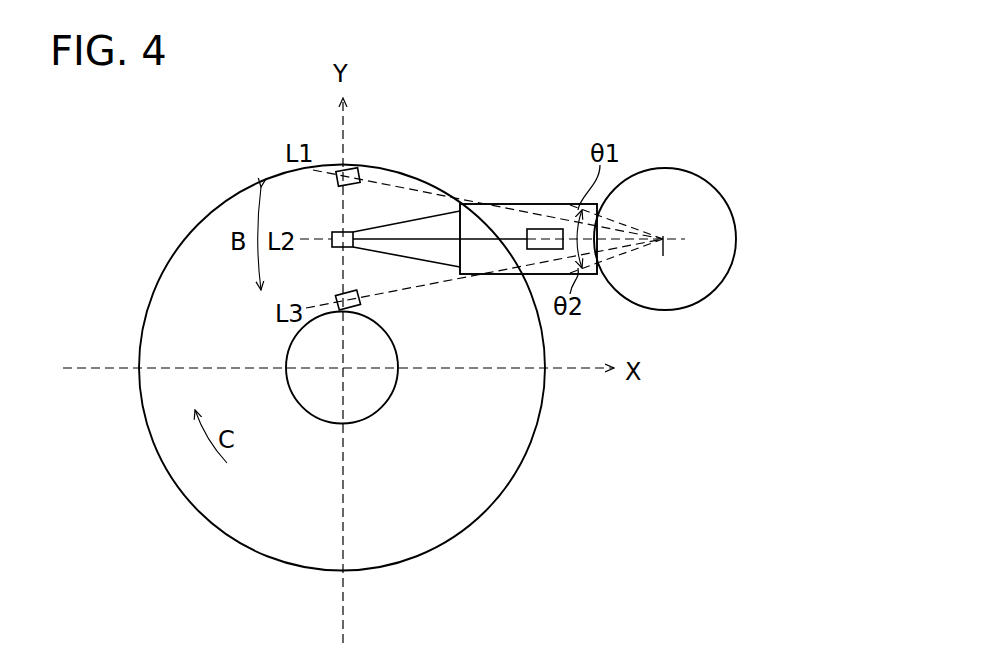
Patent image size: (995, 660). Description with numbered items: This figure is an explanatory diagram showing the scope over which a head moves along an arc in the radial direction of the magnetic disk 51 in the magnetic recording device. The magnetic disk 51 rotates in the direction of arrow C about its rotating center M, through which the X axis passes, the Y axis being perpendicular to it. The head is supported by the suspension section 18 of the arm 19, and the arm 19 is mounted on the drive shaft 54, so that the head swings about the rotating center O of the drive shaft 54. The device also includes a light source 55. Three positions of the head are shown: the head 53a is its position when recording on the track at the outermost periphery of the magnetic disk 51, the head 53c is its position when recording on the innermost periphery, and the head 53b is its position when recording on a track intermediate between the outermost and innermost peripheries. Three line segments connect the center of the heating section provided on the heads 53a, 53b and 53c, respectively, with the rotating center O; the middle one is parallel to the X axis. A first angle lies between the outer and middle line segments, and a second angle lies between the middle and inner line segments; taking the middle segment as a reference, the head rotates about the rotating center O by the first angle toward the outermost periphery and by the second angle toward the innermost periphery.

The magnetic disk 51 is at (198, 225).
The rotating center of the magnetic disk M is at (343, 369).
The head 53a is at (357, 168).
The head 53b is at (337, 232).
The head 53c is at (339, 292).
The suspension section 18 is at (433, 214).
The arm 19 is at (512, 204).
The light source 55 is at (545, 229).
The drive shaft 54 is at (700, 177).
The rotating center of the drive shaft O is at (666, 237).